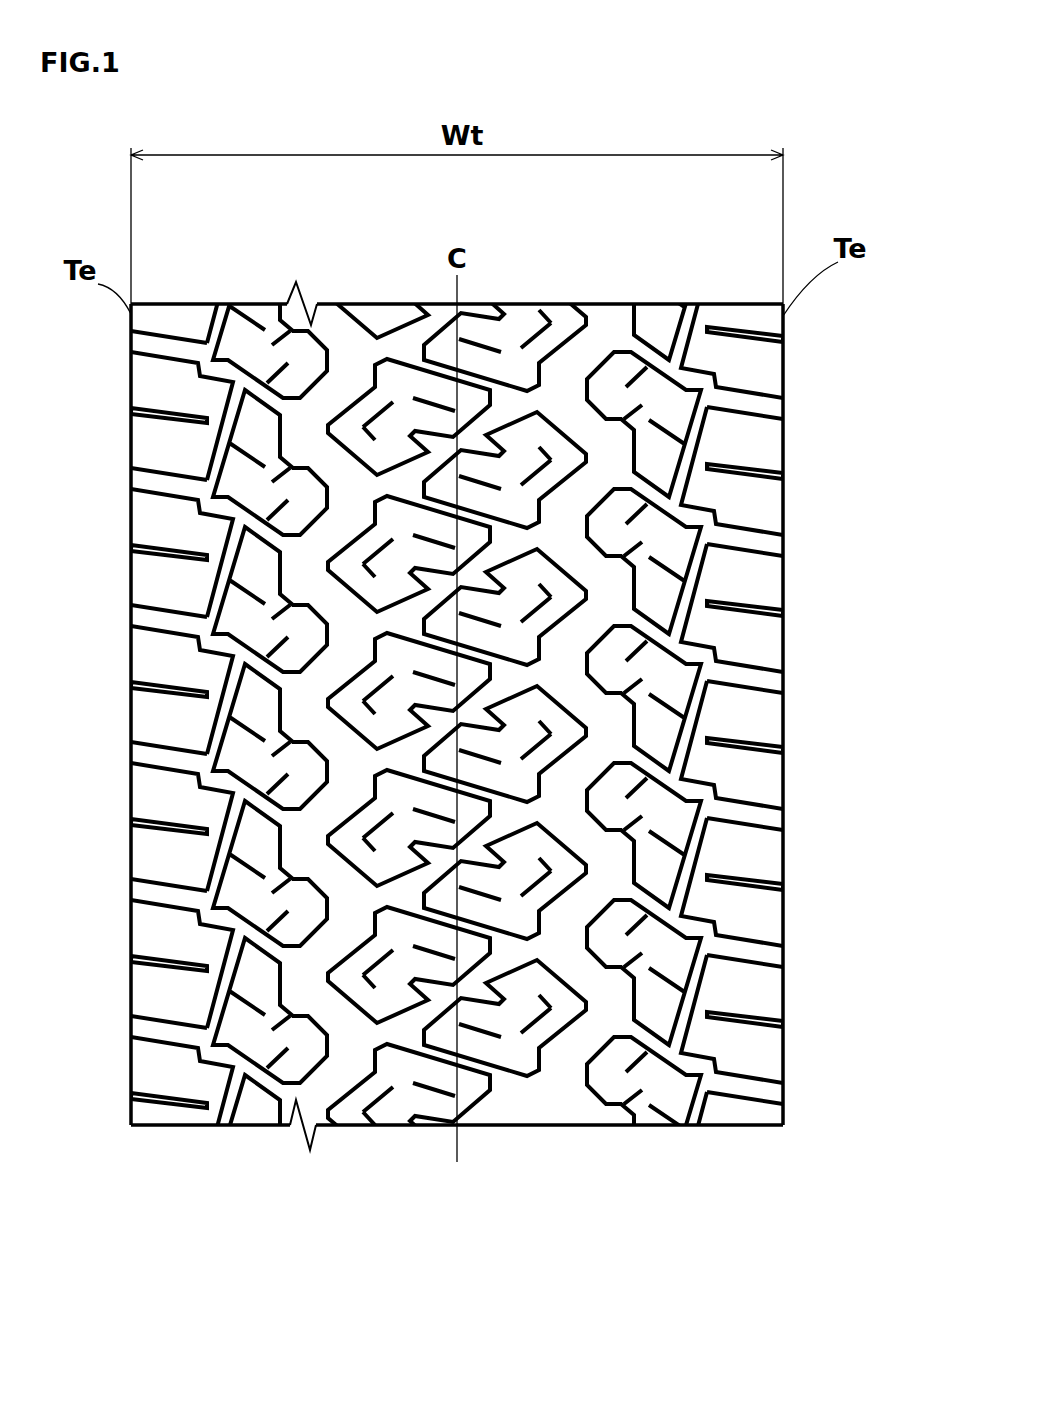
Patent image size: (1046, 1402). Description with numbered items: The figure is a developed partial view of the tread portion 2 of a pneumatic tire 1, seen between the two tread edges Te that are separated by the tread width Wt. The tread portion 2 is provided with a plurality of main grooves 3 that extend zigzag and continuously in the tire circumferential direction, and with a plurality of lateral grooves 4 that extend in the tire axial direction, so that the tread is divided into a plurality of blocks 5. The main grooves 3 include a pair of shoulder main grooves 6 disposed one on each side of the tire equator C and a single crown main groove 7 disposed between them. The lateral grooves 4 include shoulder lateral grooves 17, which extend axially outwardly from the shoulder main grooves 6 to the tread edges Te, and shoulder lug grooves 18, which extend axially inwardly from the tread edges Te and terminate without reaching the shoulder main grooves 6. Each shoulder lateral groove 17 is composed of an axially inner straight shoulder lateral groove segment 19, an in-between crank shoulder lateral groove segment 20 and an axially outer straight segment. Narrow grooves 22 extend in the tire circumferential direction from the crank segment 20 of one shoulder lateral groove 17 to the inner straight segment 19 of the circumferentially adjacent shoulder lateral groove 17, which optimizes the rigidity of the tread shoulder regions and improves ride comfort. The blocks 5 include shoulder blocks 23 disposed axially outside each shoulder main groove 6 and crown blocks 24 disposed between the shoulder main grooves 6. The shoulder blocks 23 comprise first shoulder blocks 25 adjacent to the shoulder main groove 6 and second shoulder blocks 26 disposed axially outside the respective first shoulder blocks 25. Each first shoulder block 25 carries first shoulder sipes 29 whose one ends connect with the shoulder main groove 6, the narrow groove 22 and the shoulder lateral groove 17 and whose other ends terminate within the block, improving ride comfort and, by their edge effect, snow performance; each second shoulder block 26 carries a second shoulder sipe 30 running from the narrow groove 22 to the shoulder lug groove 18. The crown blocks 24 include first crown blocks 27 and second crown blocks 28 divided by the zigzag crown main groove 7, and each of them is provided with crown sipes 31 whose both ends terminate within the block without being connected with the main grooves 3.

The tire 1 is at (822, 133).
The tread portion 2 is at (628, 227).
The main grooves 3 is at (552, 230).
The lateral grooves 4 is at (60, 340).
The blocks 5 is at (700, 1242).
The shoulder main grooves 6 is at (352, 355).
The crown main groove 7 is at (432, 335).
The shoulder lateral grooves 17 is at (150, 344).
The shoulder lug grooves 18 is at (150, 413).
The axially inner straight shoulder lateral groove segment 19 is at (485, 717).
The in-between crank shoulder lateral groove segment 20 is at (487, 717).
The narrow grooves 22 is at (245, 712).
The shoulder blocks 23 is at (195, 1192).
The crown blocks 24 is at (510, 1192).
The first shoulder blocks 25 is at (240, 905).
The second shoulder blocks 26 is at (178, 874).
The first crown blocks 27 is at (420, 985).
The second crown blocks 28 is at (513, 1050).
The first shoulder sipes 29 is at (630, 417).
The second shoulder sipe 30 is at (765, 339).
The crown sipes 31 is at (373, 985).